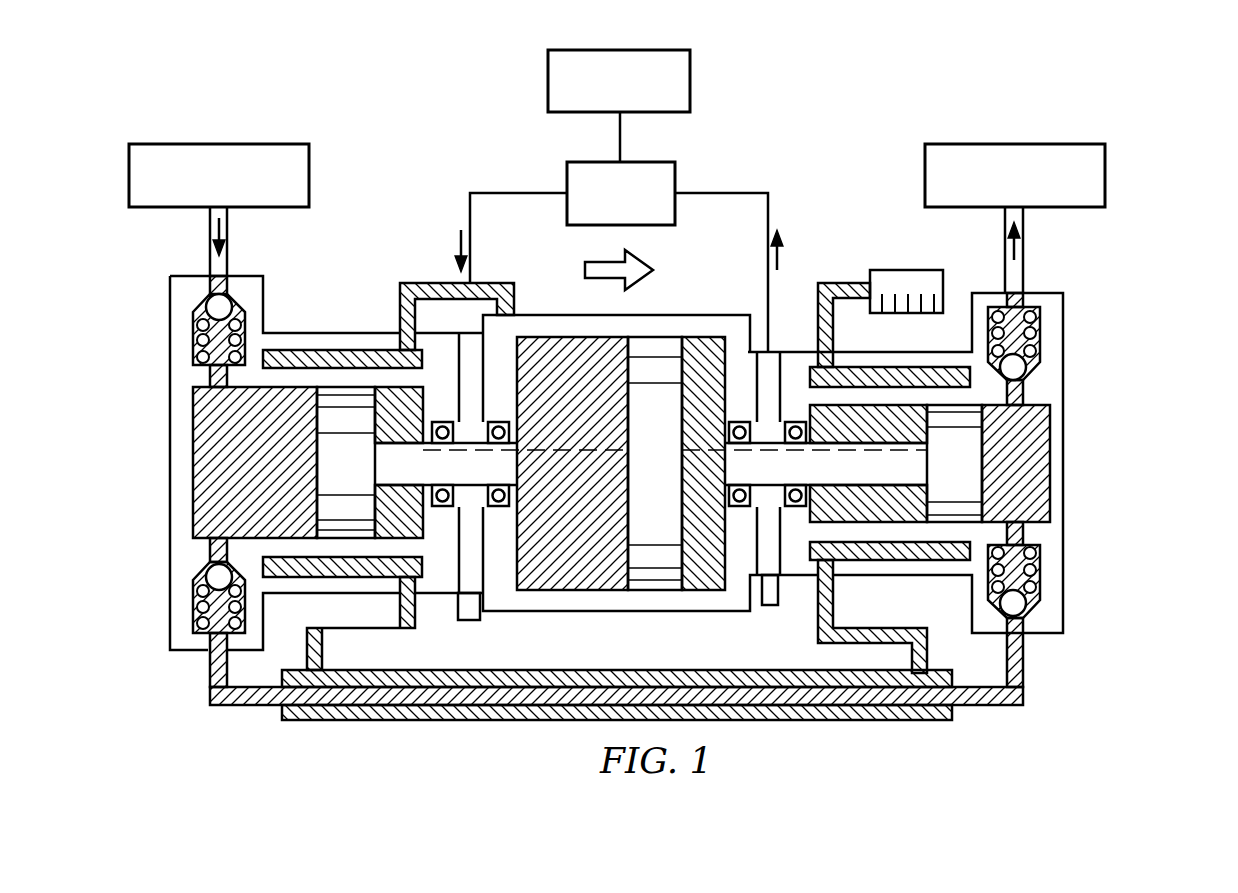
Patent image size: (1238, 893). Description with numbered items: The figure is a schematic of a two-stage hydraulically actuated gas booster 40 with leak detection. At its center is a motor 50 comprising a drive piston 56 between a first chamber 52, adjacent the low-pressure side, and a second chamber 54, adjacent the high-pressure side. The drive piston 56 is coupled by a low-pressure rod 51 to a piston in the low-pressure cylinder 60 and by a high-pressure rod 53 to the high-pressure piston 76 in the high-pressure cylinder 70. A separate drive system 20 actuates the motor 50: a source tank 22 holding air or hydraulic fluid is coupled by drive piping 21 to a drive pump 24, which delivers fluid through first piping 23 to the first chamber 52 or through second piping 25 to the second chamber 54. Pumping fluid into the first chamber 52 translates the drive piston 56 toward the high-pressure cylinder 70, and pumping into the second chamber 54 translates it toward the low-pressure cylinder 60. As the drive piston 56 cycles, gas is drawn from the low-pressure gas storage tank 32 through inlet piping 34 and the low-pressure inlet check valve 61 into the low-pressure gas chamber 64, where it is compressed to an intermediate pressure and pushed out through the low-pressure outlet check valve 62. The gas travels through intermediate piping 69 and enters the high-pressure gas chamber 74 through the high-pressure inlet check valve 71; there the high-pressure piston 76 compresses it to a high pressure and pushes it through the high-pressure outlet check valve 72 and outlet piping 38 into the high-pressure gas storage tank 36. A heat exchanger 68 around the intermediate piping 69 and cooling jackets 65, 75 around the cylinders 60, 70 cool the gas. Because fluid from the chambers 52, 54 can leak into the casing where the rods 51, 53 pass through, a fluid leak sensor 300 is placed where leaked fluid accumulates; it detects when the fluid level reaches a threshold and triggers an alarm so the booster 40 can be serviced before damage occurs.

The drive system 20 is at (876, 35).
The drive piping 21 is at (621, 130).
The source tank 22 is at (690, 72).
The first piping 23 is at (470, 205).
The drive pump 24 is at (567, 170).
The second piping 25 is at (768, 207).
The low-pressure gas storage tank 32 is at (309, 168).
The inlet piping 34 is at (228, 232).
The high-pressure gas storage tank 36 is at (925, 173).
The outlet piping 38 is at (1023, 245).
The hydraulic two-stage booster 40 is at (1146, 377).
The motor 50 is at (545, 316).
The low-pressure rod 51 is at (392, 468).
The first chamber 52 is at (572, 578).
The high-pressure rod 53 is at (835, 468).
The second chamber 54 is at (703, 578).
The drive piston 56 is at (655, 352).
The low-pressure cylinder 60 is at (170, 503).
The low-pressure inlet check valve 61 is at (195, 334).
The low-pressure outlet check valve 62 is at (195, 600).
The low-pressure gas chamber 64 is at (220, 456).
The cooling jacket 65 is at (422, 566).
The heat exchanger 68 is at (380, 720).
The intermediate piping 69 is at (210, 689).
The high-pressure cylinder 70 is at (1063, 528).
The high-pressure inlet check valve 71 is at (1013, 582).
The high-pressure outlet check valve 72 is at (1043, 352).
The high-pressure gas chamber 74 is at (1032, 480).
The cooling jacket 75 is at (882, 378).
The high-pressure piston 76 is at (965, 446).
The fluid leak sensor 300 is at (462, 622).